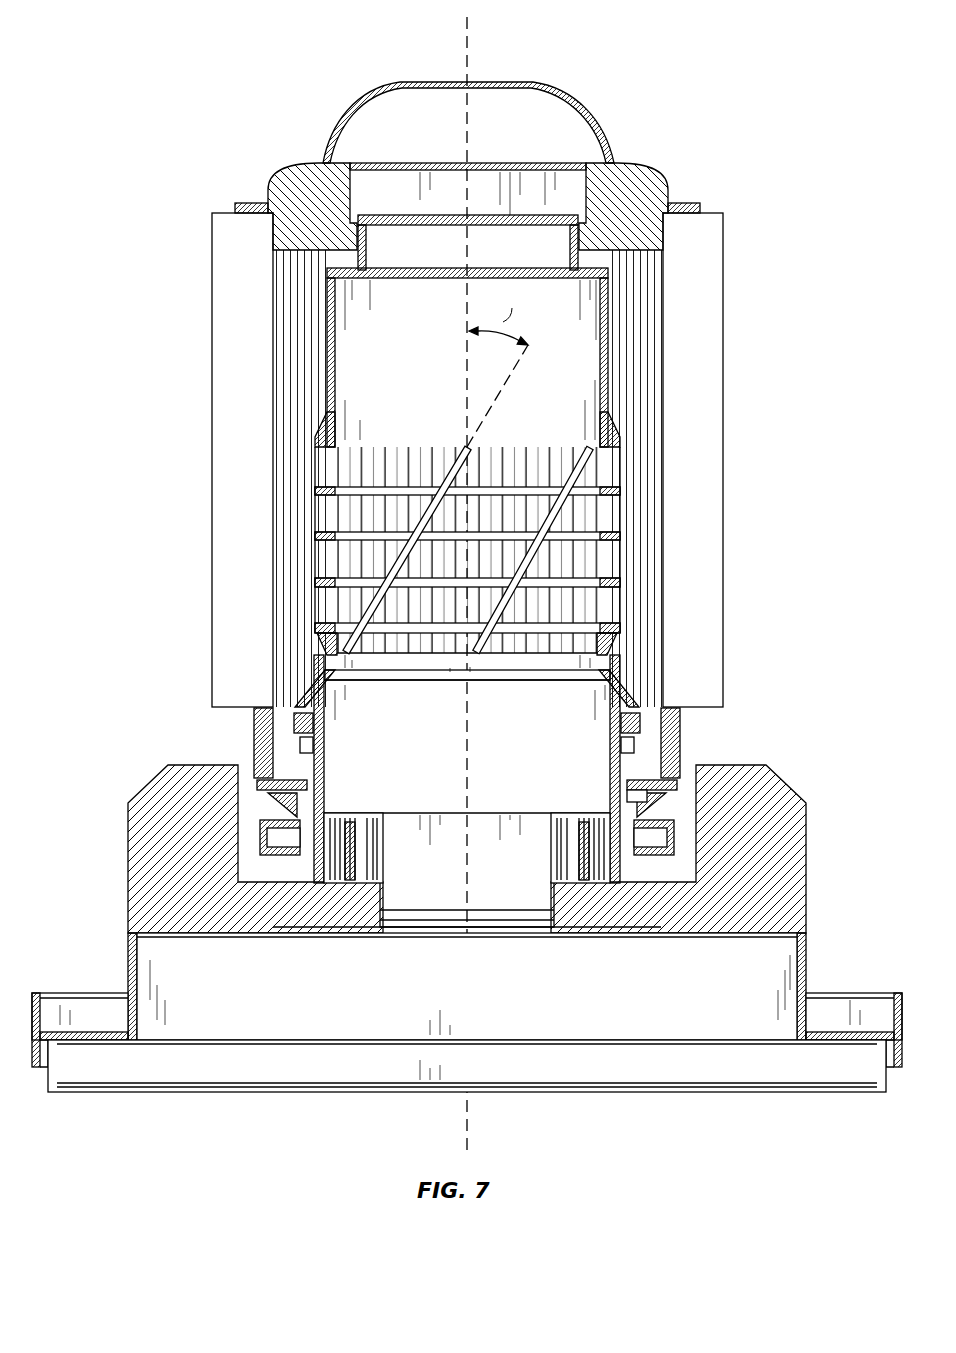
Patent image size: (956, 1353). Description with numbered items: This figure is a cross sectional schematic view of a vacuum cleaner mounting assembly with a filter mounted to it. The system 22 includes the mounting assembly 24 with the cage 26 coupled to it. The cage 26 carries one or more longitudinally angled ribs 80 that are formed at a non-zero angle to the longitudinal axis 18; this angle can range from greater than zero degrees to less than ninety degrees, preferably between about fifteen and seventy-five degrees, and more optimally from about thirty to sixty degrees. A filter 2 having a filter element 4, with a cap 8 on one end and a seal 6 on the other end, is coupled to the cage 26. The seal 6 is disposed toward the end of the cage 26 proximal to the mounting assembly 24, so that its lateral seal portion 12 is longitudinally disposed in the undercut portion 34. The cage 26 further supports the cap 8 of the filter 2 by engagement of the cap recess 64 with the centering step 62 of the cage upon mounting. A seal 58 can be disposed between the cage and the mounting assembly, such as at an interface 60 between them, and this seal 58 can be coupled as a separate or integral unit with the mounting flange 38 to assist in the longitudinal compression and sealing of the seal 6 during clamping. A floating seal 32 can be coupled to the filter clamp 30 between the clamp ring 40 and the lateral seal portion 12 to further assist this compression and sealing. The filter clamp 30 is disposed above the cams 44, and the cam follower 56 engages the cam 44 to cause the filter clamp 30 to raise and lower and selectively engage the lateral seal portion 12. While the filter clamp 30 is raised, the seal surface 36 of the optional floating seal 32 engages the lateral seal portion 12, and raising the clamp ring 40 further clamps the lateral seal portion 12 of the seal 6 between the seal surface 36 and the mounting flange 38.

The filter 2 is at (734, 203).
The filter element 4 is at (695, 347).
The seal 6 is at (236, 737).
The cap 8 is at (616, 163).
The lateral seal portion 12 is at (673, 817).
The longitudinal axis 18 is at (473, 57).
The system 22 is at (156, 121).
The mounting assembly 24 is at (112, 841).
The cage 26 is at (605, 353).
The filter clamp 30 is at (745, 800).
The floating seal 32 is at (696, 834).
The undercut portion 34 is at (300, 785).
The seal surface 36 is at (640, 797).
The mounting flange 38 is at (648, 765).
The clamp ring 40 is at (660, 848).
The cam 44 is at (282, 865).
The cam follower 56 is at (280, 840).
The seal 58 is at (355, 817).
The interface 60 is at (360, 858).
The centering step 62 is at (580, 240).
The cap recess 64 is at (352, 190).
The longitudinally angled rib 80 is at (533, 553).